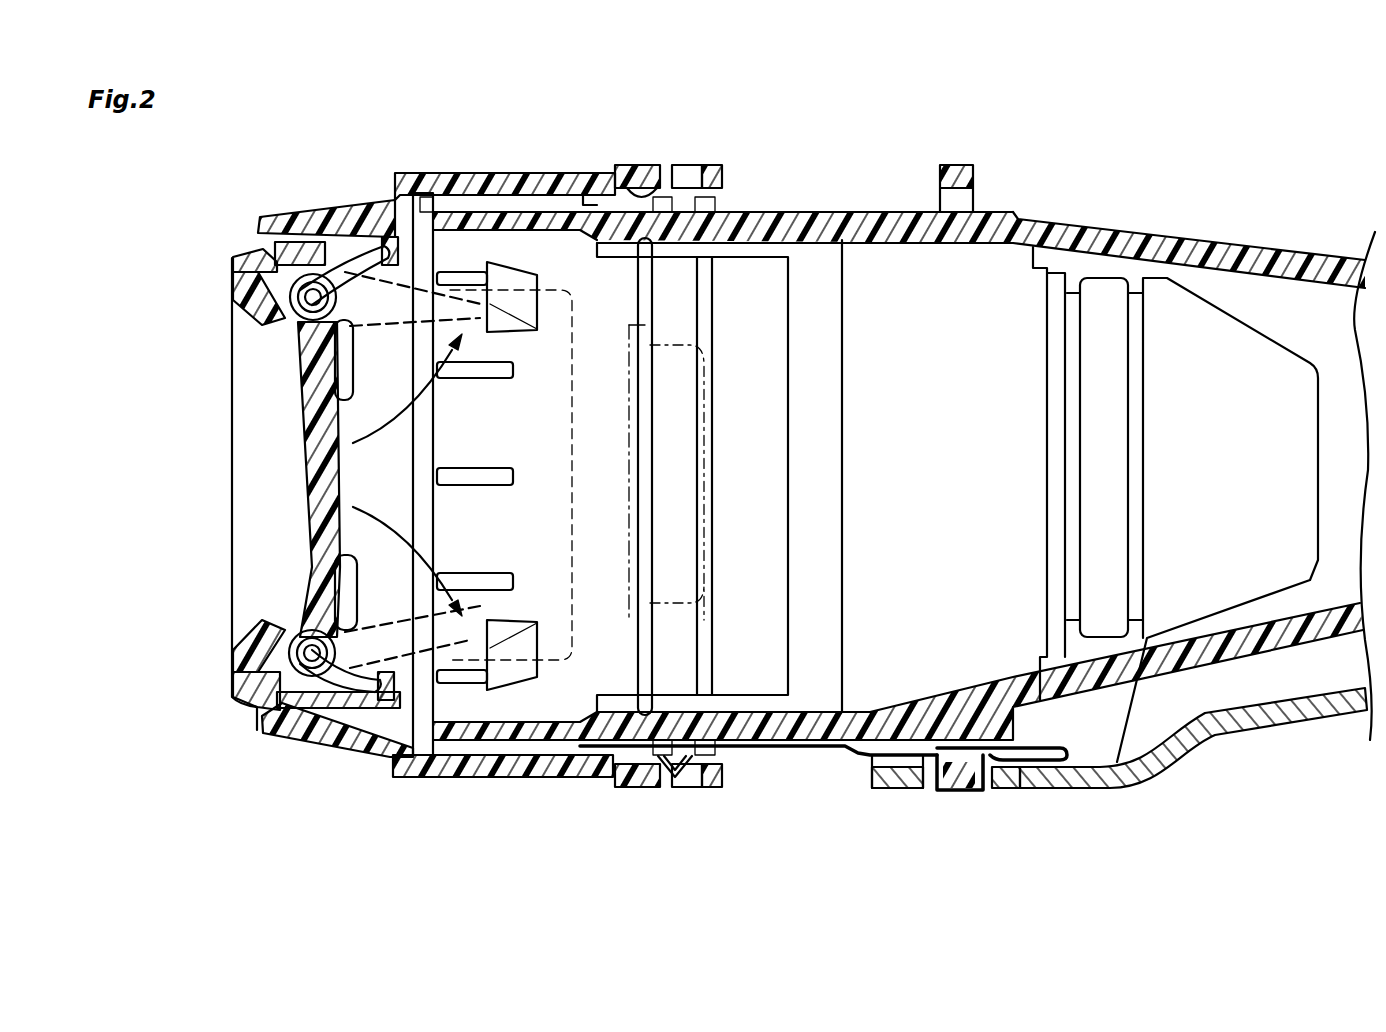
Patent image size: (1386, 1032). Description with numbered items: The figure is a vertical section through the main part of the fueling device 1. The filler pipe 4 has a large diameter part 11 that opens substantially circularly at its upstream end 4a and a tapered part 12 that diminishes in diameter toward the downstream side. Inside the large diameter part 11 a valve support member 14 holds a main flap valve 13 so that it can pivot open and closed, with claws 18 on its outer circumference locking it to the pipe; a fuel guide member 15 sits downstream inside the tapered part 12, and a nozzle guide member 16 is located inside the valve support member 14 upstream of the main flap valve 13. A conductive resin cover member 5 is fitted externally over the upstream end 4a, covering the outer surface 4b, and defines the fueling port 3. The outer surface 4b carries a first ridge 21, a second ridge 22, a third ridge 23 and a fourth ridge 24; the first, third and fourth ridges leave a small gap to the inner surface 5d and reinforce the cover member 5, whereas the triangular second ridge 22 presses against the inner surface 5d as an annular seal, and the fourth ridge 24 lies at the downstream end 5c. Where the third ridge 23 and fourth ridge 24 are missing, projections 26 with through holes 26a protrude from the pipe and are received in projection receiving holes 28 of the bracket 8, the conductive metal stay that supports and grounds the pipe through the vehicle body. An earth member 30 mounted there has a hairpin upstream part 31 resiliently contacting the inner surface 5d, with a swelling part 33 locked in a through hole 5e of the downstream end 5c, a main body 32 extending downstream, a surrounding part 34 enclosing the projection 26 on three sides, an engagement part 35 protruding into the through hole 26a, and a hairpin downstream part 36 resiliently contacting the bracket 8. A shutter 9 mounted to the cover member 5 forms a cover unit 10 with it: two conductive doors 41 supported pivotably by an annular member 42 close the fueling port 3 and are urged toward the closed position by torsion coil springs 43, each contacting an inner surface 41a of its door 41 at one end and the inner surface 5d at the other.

The fueling device 1 is at (1134, 97).
The fueling port 3 is at (290, 345).
The filler pipe 4 is at (1132, 218).
The upstream end 4a is at (508, 212).
The outer surface 4b is at (858, 212).
The cover member 5 is at (557, 172).
The downstream end 5c is at (722, 168).
The inner surface 5d is at (420, 200).
The through hole 5e is at (672, 792).
The bracket 8 is at (1243, 732).
The shutter 9 is at (278, 369).
The cover unit 10 is at (372, 192).
The large diameter part 11 is at (812, 218).
The tapered part 12 is at (1280, 258).
The main flap valve 13 is at (715, 520).
The valve support member 14 is at (775, 595).
The fuel guide member 15 is at (993, 268).
The nozzle guide member 16 is at (580, 515).
The claws 18 is at (515, 330).
The first ridge 21 is at (497, 208).
The second ridge 22 is at (588, 200).
The third ridge 23 is at (690, 182).
The fourth ridge 24 is at (725, 192).
The projections 26 is at (958, 166).
The through hole 26a is at (935, 186).
The projection receiving holes 28 is at (905, 790).
The earth member 30 is at (790, 752).
The upstream part 31 is at (630, 765).
The main body 32 is at (760, 752).
The swelling part 33 is at (680, 786).
The surrounding part 34 is at (980, 795).
The engagement part 35 is at (950, 795).
The downstream part 36 is at (1030, 788).
The doors 41 is at (330, 500).
The inner surface 41a is at (345, 540).
The annular member 42 is at (365, 200).
The torsion coil springs 43 is at (250, 258).